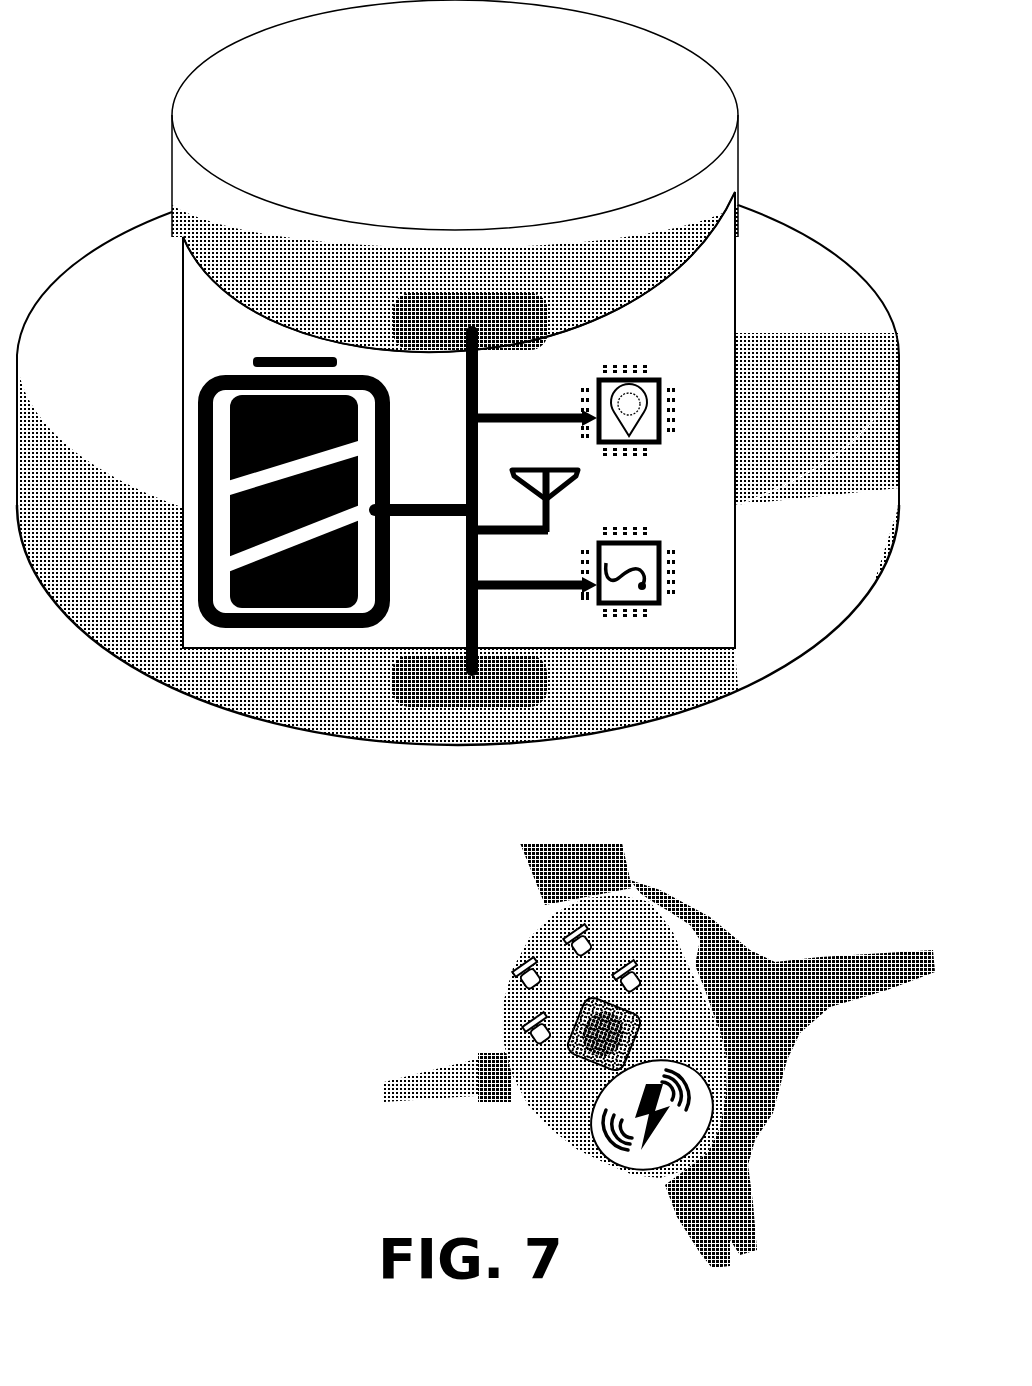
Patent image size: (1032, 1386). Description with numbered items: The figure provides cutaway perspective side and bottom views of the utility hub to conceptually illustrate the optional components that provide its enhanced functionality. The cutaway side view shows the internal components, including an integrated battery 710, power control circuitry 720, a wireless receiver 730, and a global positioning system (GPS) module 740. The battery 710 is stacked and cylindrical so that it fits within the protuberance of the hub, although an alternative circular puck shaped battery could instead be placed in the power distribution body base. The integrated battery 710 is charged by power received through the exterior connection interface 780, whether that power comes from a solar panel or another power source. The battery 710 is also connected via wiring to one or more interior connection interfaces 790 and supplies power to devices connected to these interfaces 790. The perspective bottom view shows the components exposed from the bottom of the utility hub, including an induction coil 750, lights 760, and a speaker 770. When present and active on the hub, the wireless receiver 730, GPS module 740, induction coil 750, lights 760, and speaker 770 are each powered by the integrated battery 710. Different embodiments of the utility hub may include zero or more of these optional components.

The integrated battery 710 is at (250, 388).
The power control circuitry 720 is at (660, 542).
The wireless receiver 730 is at (550, 510).
The global positioning system (GPS) module 740 is at (658, 378).
The induction coil 750 is at (600, 1152).
The lights 760 is at (525, 975).
The speaker 770 is at (596, 1050).
The exterior connection interface 780 is at (510, 307).
The interior connection interfaces 790 is at (433, 693).